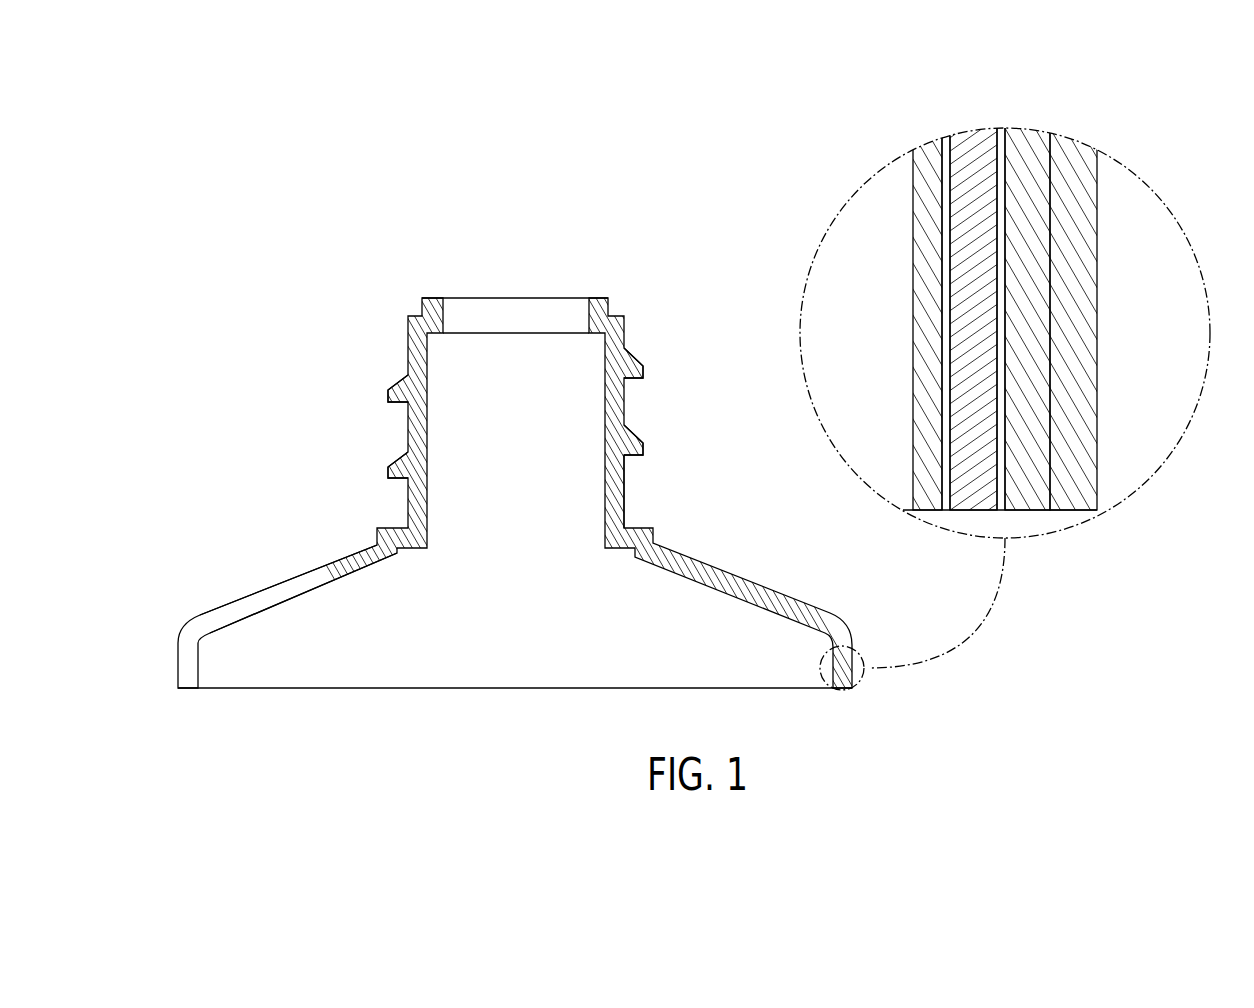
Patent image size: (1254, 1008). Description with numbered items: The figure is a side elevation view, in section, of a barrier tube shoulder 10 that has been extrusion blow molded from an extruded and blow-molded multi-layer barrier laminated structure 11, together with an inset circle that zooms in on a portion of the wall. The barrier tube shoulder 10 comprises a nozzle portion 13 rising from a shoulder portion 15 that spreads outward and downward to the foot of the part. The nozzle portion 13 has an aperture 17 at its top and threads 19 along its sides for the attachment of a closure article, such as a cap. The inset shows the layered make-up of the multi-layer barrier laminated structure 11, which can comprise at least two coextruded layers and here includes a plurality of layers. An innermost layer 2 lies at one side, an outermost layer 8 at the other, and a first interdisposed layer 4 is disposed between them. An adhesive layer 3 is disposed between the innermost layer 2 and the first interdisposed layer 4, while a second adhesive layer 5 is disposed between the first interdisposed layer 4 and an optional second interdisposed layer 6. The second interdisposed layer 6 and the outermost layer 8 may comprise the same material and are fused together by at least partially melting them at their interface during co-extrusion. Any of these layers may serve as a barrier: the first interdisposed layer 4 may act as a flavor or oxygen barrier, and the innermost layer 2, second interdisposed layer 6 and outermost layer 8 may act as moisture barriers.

The barrier tube shoulder 10 is at (523, 504).
The aperture 17 is at (537, 298).
The threads 19 is at (388, 393).
The nozzle portion 13 is at (625, 498).
The shoulder portion 15 is at (307, 577).
The multi-layer barrier laminated structure 11 is at (932, 504).
The innermost layer 2 is at (925, 287).
The adhesive layer 3 is at (945, 150).
The first interdisposed layer 4 is at (962, 172).
The adhesive layer 5 is at (1000, 488).
The second interdisposed layer 6 is at (1043, 483).
The outermost layer 8 is at (1072, 157).